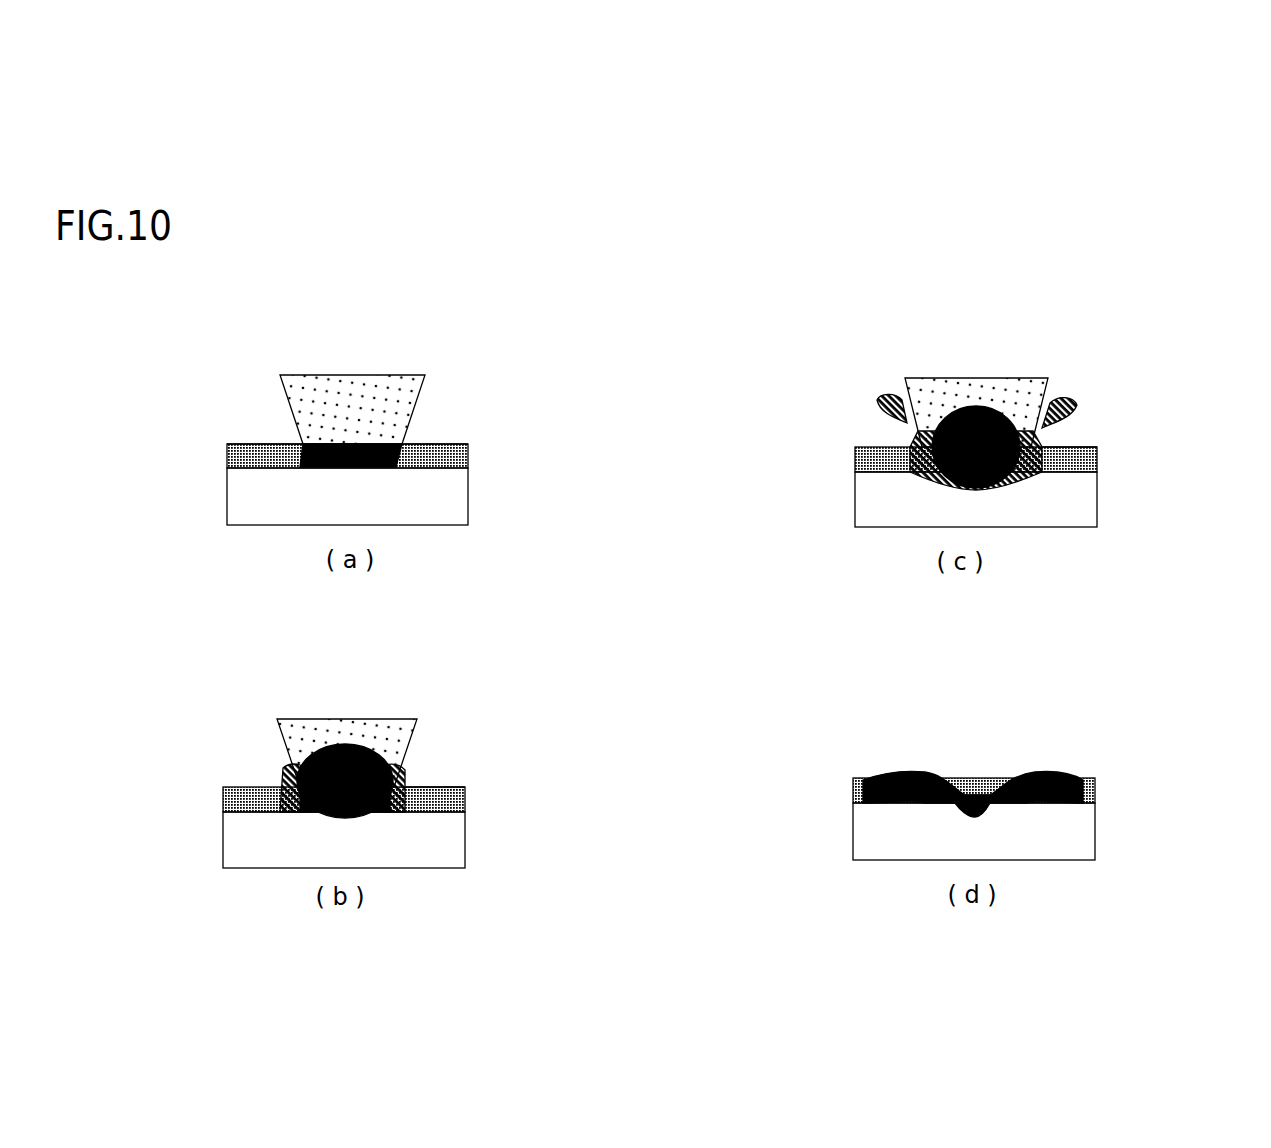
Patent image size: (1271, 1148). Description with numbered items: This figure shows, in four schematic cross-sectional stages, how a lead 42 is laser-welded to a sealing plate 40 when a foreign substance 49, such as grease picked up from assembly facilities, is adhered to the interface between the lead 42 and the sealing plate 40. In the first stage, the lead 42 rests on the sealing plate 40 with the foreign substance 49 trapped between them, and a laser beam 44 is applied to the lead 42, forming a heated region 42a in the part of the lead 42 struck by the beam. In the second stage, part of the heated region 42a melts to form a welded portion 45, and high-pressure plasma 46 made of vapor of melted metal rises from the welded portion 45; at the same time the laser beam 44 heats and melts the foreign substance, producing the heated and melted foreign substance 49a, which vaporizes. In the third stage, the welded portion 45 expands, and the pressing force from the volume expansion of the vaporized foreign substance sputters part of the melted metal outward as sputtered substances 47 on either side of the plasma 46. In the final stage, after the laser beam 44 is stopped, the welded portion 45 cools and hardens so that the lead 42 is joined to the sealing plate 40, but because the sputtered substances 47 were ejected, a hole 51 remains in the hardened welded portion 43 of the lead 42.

The sealing plate 40 is at (245, 500).
The lead 42 is at (240, 455).
The heated region 42a is at (388, 445).
The welded portion 43 is at (1043, 775).
The laser beam 44 is at (313, 402).
The welded portion 45 is at (407, 770).
The high-pressure plasma 46 is at (370, 722).
The sputtered substances 47 is at (1063, 407).
The foreign substance 49 is at (378, 468).
The heated and melted foreign substance 49a is at (383, 812).
The hole 51 is at (975, 775).